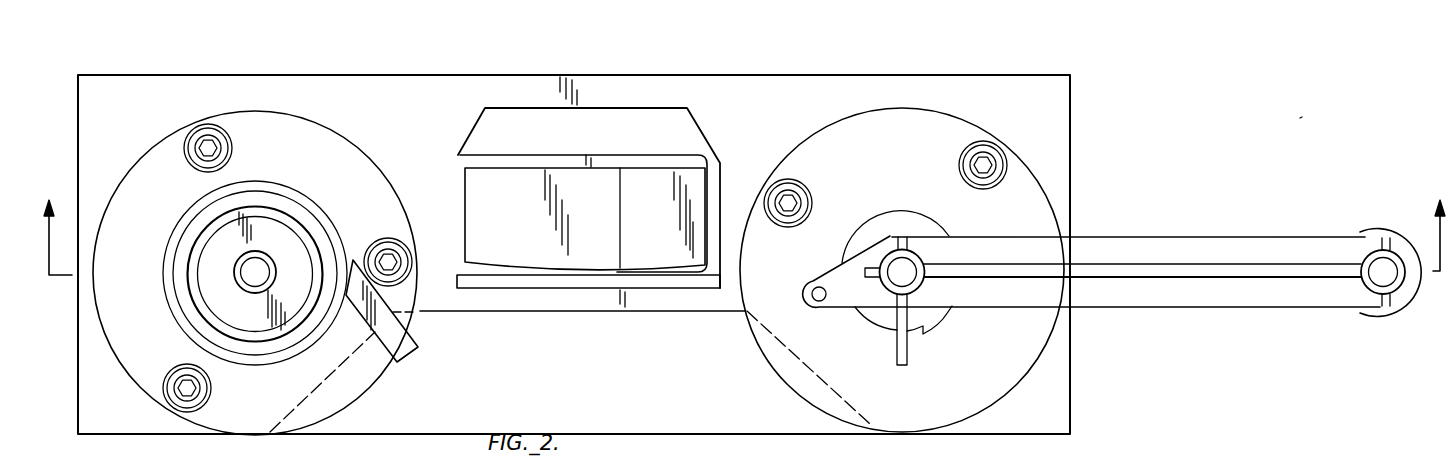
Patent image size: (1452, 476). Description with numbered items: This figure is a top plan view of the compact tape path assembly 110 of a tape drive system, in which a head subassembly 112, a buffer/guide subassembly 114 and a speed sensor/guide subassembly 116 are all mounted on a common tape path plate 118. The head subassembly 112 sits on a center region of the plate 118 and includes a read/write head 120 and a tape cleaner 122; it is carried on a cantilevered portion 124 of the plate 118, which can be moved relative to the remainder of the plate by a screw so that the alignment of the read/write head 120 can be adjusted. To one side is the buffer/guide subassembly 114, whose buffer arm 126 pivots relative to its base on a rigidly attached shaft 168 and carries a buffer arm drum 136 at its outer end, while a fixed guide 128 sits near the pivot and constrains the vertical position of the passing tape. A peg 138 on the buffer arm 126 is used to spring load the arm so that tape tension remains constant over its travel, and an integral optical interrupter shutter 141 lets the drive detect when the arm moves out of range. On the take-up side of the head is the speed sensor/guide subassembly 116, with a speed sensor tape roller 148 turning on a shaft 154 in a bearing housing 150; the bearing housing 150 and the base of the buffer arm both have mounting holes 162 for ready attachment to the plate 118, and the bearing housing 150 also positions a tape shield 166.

The tape path assembly 110 is at (1300, 119).
The head subassembly 112 is at (645, 134).
The buffer/guide subassembly 114 is at (812, 411).
The speed sensor/guide subassembly 116 is at (241, 437).
The tape path plate 118 is at (410, 112).
The read/write head 120 is at (527, 268).
The tape cleaner 122 is at (660, 268).
The cantilevered portion 124 is at (673, 157).
The buffer arm 126 is at (1289, 251).
The fixed guide 128 is at (884, 316).
The buffer arm drum 136 is at (1388, 315).
The peg 138 is at (812, 298).
The optical interrupter shutter 141 is at (920, 340).
The speed sensor tape roller 148 is at (192, 217).
The bearing housing 150 is at (325, 169).
The shaft 154 is at (236, 273).
The mounting holes 162 is at (208, 141).
The tape shield 166 is at (413, 349).
The shaft 168 is at (897, 266).